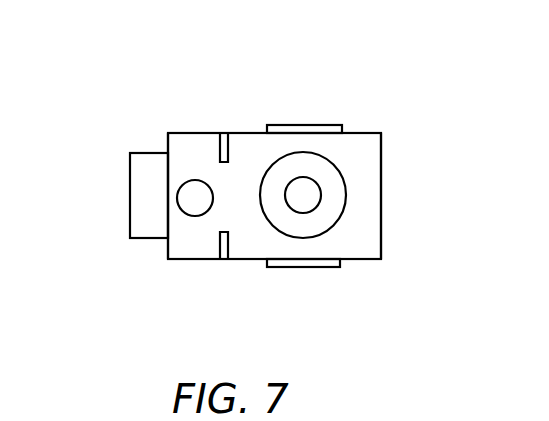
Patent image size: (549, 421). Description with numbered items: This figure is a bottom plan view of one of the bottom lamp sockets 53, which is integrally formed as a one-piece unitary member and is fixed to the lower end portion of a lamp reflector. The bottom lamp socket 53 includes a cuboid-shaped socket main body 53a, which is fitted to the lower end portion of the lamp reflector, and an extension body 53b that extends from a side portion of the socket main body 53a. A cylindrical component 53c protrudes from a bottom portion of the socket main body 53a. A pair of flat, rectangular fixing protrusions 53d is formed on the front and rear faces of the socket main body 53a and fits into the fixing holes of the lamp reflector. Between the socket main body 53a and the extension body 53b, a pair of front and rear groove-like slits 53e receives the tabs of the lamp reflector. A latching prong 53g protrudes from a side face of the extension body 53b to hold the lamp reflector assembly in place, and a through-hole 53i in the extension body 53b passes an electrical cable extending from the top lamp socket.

The bottom lamp socket 53 is at (163, 108).
The socket main body 53a is at (367, 162).
The extension body 53b is at (180, 143).
The cylindrical component 53c is at (347, 195).
The fixing protrusions 53d is at (308, 125).
The groove-like slits 53e is at (232, 135).
The latching prong 53g is at (130, 183).
The through-hole 53i is at (192, 199).